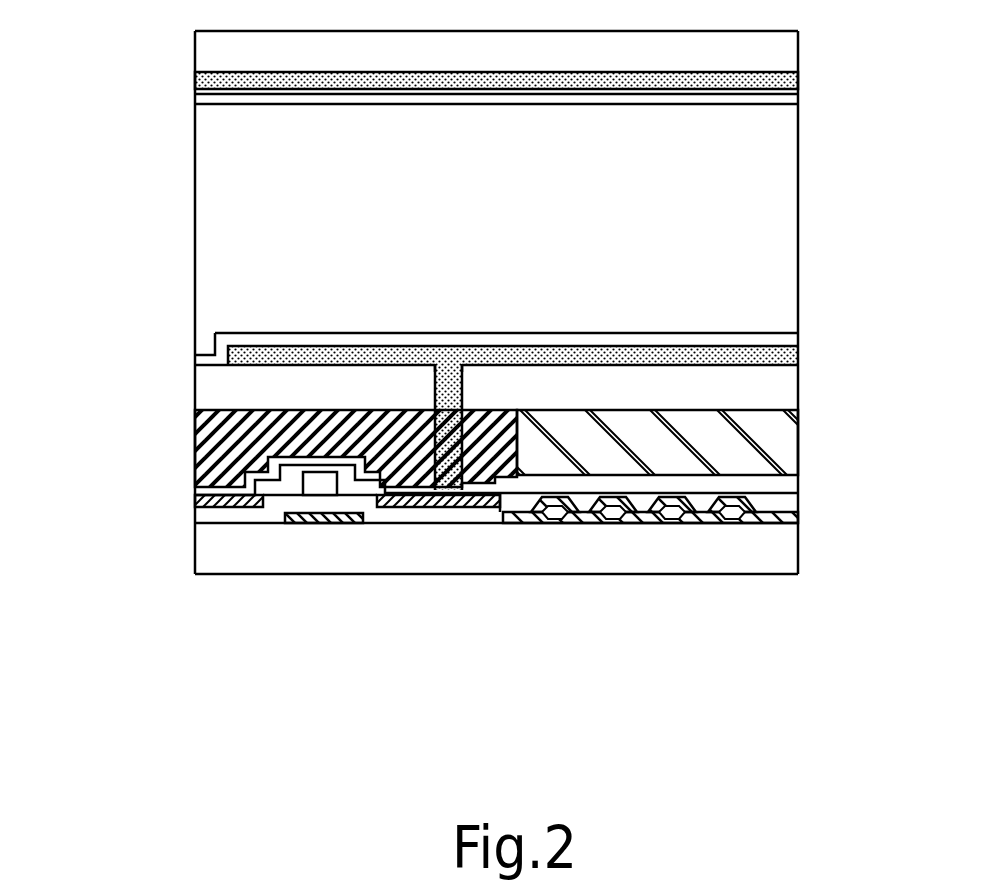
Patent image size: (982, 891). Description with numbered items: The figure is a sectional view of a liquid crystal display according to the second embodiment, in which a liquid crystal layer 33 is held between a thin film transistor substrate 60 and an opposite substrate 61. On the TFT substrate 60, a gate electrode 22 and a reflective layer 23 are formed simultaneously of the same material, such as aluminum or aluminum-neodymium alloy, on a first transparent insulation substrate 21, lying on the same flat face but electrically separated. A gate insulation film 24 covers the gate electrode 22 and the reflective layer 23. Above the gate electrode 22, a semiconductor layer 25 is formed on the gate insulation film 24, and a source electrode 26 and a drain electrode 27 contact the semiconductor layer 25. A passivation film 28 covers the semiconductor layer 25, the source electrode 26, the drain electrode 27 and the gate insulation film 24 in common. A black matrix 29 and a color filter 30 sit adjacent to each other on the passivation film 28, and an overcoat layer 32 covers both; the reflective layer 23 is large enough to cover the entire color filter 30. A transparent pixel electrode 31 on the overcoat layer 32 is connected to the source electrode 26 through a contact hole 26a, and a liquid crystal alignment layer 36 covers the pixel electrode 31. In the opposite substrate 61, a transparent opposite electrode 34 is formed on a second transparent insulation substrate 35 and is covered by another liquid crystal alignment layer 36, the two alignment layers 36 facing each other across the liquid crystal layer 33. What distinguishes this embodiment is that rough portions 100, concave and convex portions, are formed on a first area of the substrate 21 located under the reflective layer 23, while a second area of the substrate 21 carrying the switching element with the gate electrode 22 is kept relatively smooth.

The first transparent insulation substrate 21 is at (203, 560).
The gate electrode 22 is at (343, 523).
The reflective layer 23 is at (770, 522).
The gate insulation film 24 is at (197, 522).
The semiconductor layer 25 is at (312, 500).
The source electrode 26 is at (417, 503).
The contact hole 26a is at (436, 395).
The drain electrode 27 is at (197, 502).
The passivation film 28 is at (197, 495).
The black matrix 29 is at (197, 445).
The color filter 30 is at (785, 448).
The transparent pixel electrode 31 is at (800, 350).
The overcoat layer 32 is at (785, 395).
The liquid crystal layer 33 is at (195, 228).
The transparent opposite electrode 34 is at (195, 90).
The second transparent insulation substrate 35 is at (195, 51).
The liquid crystal alignment layer 36 is at (747, 103).
The thin film transistor substrate 60 is at (100, 335).
The opposite substrate 61 is at (98, 32).
The rough portions 100 is at (733, 522).